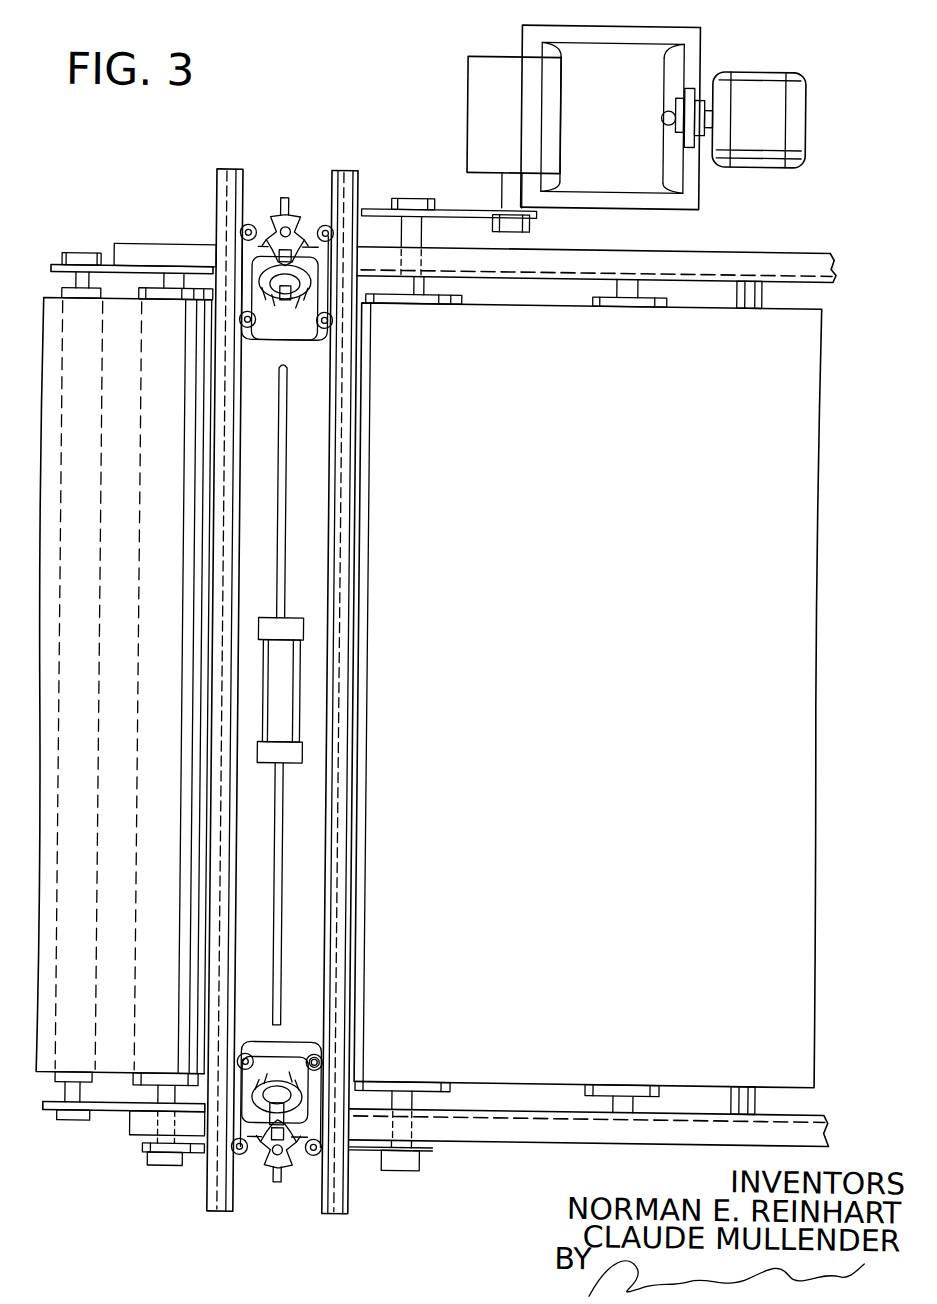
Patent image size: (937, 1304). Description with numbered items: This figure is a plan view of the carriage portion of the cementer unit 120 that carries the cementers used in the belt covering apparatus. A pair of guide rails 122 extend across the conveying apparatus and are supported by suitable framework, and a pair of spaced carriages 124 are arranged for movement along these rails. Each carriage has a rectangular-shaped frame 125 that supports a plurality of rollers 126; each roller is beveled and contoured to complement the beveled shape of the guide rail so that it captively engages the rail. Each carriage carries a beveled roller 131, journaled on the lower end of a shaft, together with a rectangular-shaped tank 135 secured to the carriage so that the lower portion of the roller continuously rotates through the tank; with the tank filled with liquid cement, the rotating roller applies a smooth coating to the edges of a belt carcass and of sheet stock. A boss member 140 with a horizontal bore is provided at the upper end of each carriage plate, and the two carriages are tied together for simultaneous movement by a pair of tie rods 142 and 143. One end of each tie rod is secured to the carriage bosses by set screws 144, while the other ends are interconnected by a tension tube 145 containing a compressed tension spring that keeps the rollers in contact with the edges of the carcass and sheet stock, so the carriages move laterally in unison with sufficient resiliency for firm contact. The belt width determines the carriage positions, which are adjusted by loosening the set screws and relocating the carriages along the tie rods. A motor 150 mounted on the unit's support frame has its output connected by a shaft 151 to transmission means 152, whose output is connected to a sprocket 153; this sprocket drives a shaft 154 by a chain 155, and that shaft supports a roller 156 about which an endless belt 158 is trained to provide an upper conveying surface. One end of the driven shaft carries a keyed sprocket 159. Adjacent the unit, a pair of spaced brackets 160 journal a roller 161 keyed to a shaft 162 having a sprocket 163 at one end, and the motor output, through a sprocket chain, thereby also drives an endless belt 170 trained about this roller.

The cementer unit 120 is at (170, 1236).
The guide rails 122 is at (247, 537).
The carriages 124 is at (307, 347).
The rectangular-shaped frame 125 is at (248, 288).
The rollers 126 is at (323, 338).
The beveled roller 131 is at (293, 297).
The rectangular-shaped tank 135 is at (319, 1056).
The boss member 140 is at (266, 222).
The tie rod 142 is at (290, 908).
The tie rod 143 is at (285, 197).
The set screws 144 is at (306, 222).
The tension tube 145 is at (292, 703).
The motor 150 is at (770, 100).
The shaft 151 is at (713, 118).
The transmission means 152 is at (642, 168).
The sprocket 153 is at (530, 216).
The shaft 154 is at (440, 282).
The chain 155 is at (467, 208).
The roller 156 is at (450, 296).
The endless belt 158 is at (691, 722).
The sprocket 159 is at (430, 1164).
The brackets 160 is at (112, 268).
The roller 161 is at (144, 1083).
The shaft 162 is at (138, 1112).
The sprocket 163 is at (205, 1160).
The endless belt 170 is at (196, 534).